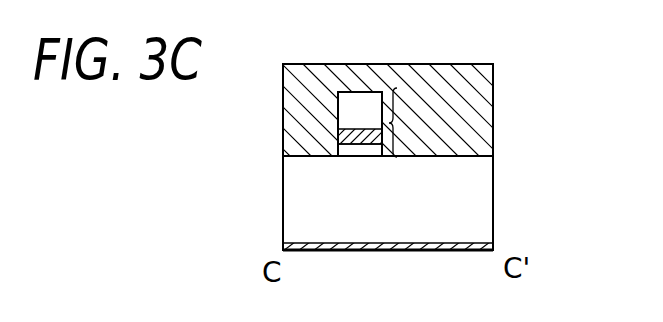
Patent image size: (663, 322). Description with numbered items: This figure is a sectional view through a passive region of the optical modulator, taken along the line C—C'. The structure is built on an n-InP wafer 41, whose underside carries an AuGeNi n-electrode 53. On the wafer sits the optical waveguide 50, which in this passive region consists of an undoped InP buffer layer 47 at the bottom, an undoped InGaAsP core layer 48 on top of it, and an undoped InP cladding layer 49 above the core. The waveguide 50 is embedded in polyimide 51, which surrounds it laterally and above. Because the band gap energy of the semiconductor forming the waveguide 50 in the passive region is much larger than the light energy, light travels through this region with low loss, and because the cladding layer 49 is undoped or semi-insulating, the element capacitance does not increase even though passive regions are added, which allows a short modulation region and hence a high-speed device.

The n-InP wafer 41 is at (480, 198).
The undoped InP buffer layer 47 is at (353, 158).
The undoped InGaAsP core layer 48 is at (340, 136).
The undoped InP cladding layer 49 is at (361, 99).
The optical waveguide 50 is at (409, 122).
The polyimide 51 is at (482, 82).
The AuGeNi n-electrode 53 is at (388, 253).